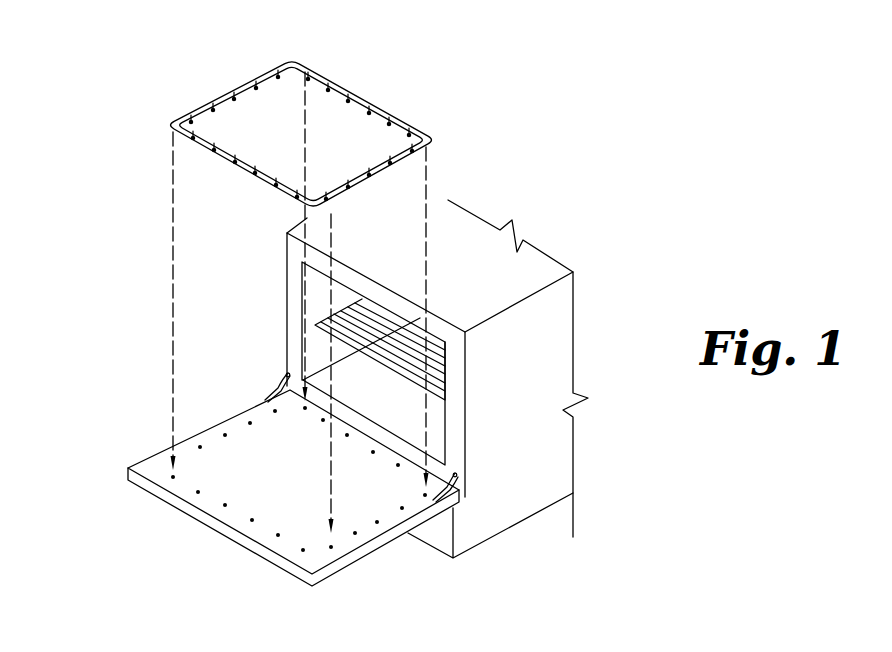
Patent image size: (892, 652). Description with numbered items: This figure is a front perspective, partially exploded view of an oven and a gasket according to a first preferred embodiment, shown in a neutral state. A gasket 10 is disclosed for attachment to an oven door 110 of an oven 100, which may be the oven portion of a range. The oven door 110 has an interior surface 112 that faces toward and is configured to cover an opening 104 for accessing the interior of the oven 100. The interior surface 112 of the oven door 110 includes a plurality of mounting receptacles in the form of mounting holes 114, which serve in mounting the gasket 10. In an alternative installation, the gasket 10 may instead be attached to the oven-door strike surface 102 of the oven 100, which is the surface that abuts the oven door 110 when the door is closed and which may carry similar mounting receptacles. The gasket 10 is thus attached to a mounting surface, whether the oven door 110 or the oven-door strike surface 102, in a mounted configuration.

The gasket 10 is at (408, 80).
The oven 100 is at (545, 192).
The oven-door strike surface 102 is at (452, 420).
The opening 104 is at (350, 378).
The oven door 110 is at (239, 490).
The interior surface 112 is at (262, 485).
The mounting holes 114 is at (170, 474).